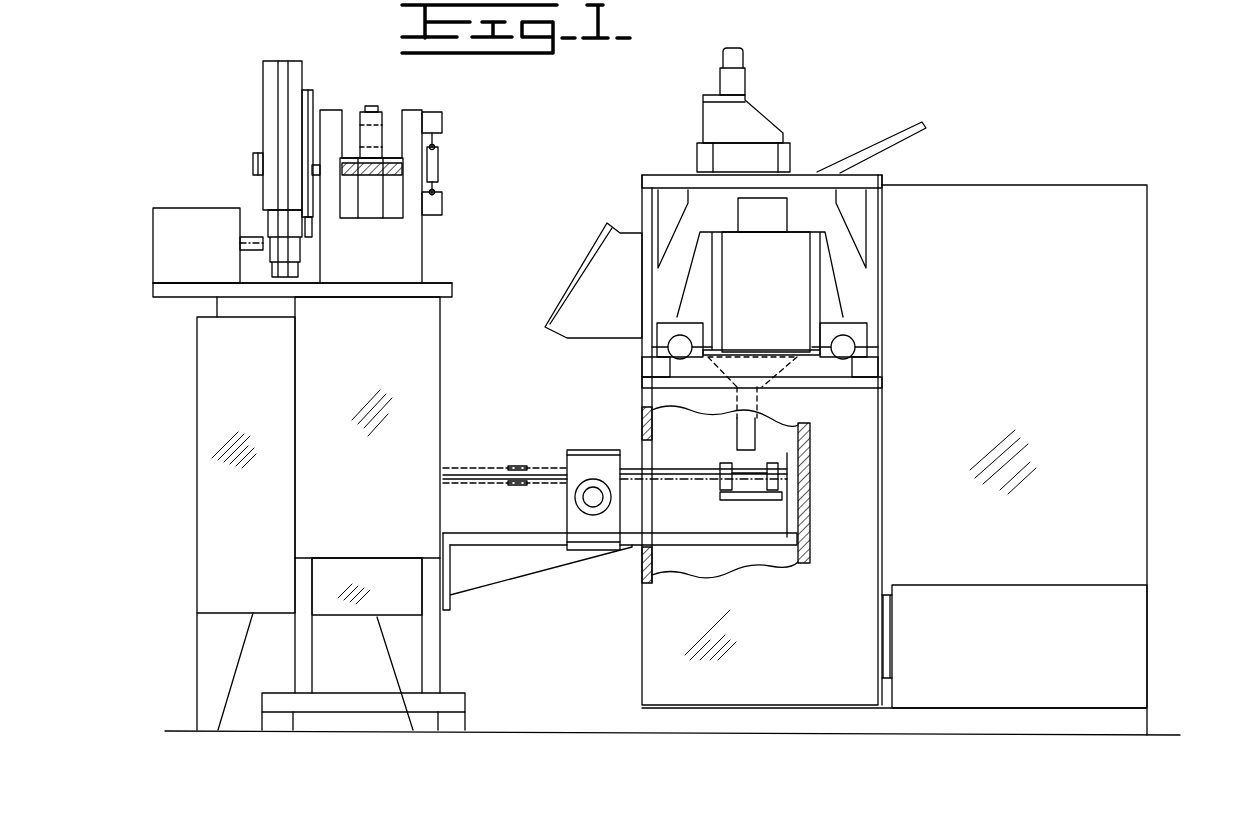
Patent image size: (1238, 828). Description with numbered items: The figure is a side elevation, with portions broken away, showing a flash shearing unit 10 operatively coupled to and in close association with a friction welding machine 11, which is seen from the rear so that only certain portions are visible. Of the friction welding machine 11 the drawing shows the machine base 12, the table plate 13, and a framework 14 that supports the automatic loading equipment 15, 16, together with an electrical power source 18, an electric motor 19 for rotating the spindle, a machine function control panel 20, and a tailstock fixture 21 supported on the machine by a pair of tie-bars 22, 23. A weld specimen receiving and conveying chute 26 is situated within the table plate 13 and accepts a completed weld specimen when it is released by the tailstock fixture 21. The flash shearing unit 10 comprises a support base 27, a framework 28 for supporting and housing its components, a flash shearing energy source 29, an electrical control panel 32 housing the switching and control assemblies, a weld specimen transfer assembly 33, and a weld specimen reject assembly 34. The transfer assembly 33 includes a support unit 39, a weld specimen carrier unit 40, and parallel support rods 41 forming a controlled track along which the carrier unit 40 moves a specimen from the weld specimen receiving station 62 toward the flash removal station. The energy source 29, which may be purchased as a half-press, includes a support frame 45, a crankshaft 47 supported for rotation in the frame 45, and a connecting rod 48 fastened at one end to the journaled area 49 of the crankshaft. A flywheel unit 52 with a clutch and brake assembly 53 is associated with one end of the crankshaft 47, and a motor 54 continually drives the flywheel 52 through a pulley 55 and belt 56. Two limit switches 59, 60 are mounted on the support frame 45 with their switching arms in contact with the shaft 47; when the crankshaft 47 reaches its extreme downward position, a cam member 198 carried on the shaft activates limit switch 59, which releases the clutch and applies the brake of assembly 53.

The flash shearing unit 10 is at (497, 187).
The friction welding machine 11 is at (894, 424).
The machine base 12 is at (638, 645).
The table plate 13 is at (880, 385).
The framework 14 is at (880, 237).
The automatic loading equipment 15 is at (857, 122).
The automatic loading equipment 16 is at (760, 88).
The electrical power source 18 is at (1019, 344).
The electric motor 19 is at (1017, 654).
The machine function control panel 20 is at (586, 324).
The tailstock fixture 21 is at (744, 264).
The tie-bar 22 is at (688, 345).
The tie-bar 23 is at (830, 345).
The weld specimen receiving and conveying chute 26 is at (765, 392).
The support base 27 is at (462, 708).
The framework 28 is at (430, 640).
The flash shearing energy source 29 is at (436, 92).
The electrical control panel 32 is at (226, 374).
The weld specimen transfer assembly 33 is at (536, 448).
The weld specimen reject assembly 34 is at (565, 505).
The support unit 39 is at (545, 570).
The weld specimen carrier unit 40 is at (748, 505).
The support rod 41 is at (490, 478).
The support frame 45 is at (410, 264).
The crankshaft 47 is at (392, 125).
The connecting rod 48 is at (375, 213).
The journaled area 49 is at (363, 122).
The flywheel unit 52 is at (271, 159).
The clutch and brake assembly 53 is at (307, 95).
The motor 54 is at (186, 254).
The pulley 55 is at (272, 270).
The belt 56 is at (272, 130).
The limit switch 59 is at (442, 122).
The limit switch 60 is at (442, 205).
The weld specimen receiving station 62 is at (728, 447).
The cam member 198 is at (440, 150).